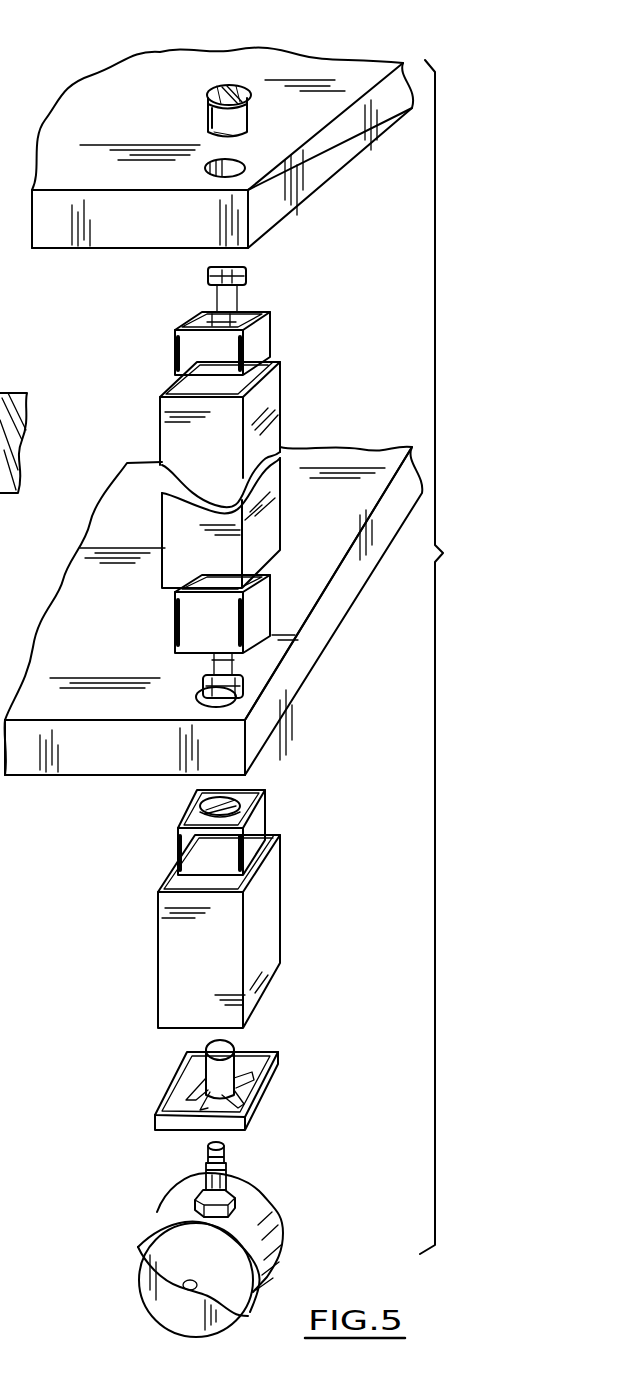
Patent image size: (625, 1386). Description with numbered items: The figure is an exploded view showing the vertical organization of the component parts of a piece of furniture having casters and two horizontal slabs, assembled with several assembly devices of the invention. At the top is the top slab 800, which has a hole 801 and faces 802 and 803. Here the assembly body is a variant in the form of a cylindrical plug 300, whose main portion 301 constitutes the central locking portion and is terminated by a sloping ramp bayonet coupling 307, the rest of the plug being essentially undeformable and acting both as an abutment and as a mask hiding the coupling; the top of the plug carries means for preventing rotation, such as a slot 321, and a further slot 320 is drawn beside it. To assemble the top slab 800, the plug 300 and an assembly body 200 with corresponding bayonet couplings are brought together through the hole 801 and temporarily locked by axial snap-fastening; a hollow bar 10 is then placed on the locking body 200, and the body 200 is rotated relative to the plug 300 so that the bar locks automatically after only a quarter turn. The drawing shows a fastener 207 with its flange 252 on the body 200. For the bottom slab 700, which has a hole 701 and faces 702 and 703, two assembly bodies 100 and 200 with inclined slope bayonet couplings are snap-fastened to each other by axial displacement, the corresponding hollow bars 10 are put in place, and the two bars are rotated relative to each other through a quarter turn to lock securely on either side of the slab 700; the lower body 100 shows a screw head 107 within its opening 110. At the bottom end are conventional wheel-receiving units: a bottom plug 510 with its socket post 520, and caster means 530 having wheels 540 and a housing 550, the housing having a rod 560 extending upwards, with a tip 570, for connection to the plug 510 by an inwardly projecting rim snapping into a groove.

The hollow bar 10 is at (266, 413).
The assembly body 100 is at (271, 807).
The screw head 107 is at (235, 797).
The cap opening 110 is at (196, 803).
The assembly body 200 is at (271, 336).
The bolt 207 is at (249, 277).
The bolt head flange 252 is at (214, 273).
The plug-forming assembly body 300 is at (254, 114).
The main portion 301 is at (213, 115).
The sloping ramp bayonet coupling 307 is at (216, 139).
The slot 320 is at (216, 85).
The slot 321 is at (232, 85).
The bottom plug 510 is at (272, 1078).
The socket post 520 is at (236, 1048).
The caster means 530 is at (289, 1235).
The wheels 540 is at (217, 1318).
The housing 550 is at (255, 1212).
The rod 560 is at (229, 1178).
The stem tip 570 is at (227, 1158).
The bottom slab 700 is at (348, 616).
The hole 701 is at (256, 672).
The face 702 is at (357, 508).
The face 703 is at (81, 775).
The top slab 800 is at (325, 189).
The hole 801 is at (233, 165).
The face 802 is at (342, 97).
The face 803 is at (118, 248).